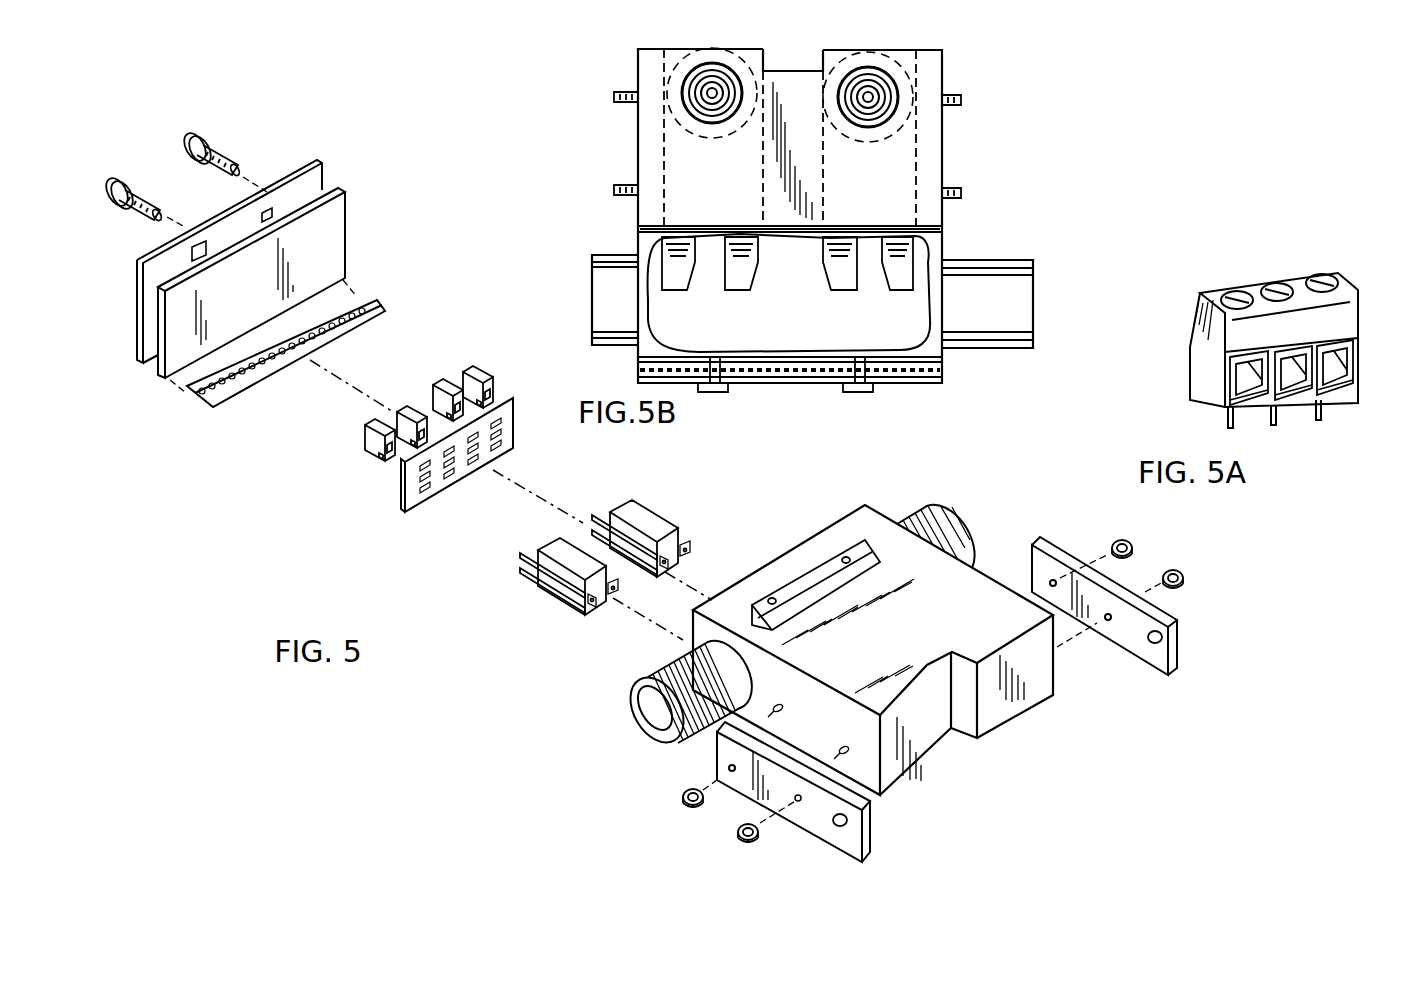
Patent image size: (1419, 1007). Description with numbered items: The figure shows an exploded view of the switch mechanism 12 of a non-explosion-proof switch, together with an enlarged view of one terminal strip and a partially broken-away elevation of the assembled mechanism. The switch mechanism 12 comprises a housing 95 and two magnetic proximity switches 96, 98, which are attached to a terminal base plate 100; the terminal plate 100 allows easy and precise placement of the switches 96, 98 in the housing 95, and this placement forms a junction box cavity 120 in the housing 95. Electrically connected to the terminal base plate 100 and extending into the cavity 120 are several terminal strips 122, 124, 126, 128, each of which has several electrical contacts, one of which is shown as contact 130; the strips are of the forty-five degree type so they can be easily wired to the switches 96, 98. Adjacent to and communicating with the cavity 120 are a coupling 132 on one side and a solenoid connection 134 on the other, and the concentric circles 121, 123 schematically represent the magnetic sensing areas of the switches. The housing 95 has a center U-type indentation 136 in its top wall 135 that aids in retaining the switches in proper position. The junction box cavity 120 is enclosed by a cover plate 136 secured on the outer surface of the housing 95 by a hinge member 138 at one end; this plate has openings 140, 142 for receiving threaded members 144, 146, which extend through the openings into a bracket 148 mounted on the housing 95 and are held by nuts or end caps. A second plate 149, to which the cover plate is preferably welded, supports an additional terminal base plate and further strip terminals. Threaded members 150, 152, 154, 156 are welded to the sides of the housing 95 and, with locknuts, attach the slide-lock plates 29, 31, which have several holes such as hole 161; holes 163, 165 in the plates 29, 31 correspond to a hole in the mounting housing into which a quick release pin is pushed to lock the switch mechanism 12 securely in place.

In FIG. 5, the switch mechanism 12 is at (910, 646).
In FIG. 5, the slide and lock plate 29 is at (717, 753).
In FIG. 5, the slide and lock plate 31 is at (1042, 565).
In FIG. 5, the housing 95 is at (960, 590).
In FIG. 5B, the housing 95 is at (960, 66).
In FIG. 5, the magnetic proximity switch 96 is at (648, 525).
In FIG. 5B, the magnetic proximity switch 96 is at (694, 186).
In FIG. 5, the magnetic proximity switch 98 is at (547, 597).
In FIG. 5B, the magnetic proximity switch 98 is at (859, 188).
In FIG. 5, the terminal base plate 100 is at (405, 505).
In FIG. 5B, the terminal base plate 100 is at (945, 230).
In FIG. 5B, the junction box cavity 120 is at (770, 293).
In FIG. 5B, the magnetic sensing area 121 is at (880, 55).
In FIG. 5, the terminal strip 122 is at (367, 455).
In FIG. 5A, the terminal strip 122 is at (1295, 420).
In FIG. 5B, the terminal strip 122 is at (900, 285).
In FIG. 5B, the magnetic sensing area 123 is at (703, 57).
In FIG. 5, the terminal strip 124 is at (403, 410).
In FIG. 5A, the terminal strip 124 is at (1293, 373).
In FIG. 5B, the terminal strip 124 is at (843, 285).
In FIG. 5, the terminal strip 126 is at (443, 385).
In FIG. 5A, the terminal strip 126 is at (1335, 367).
In FIG. 5B, the terminal strip 126 is at (745, 285).
In FIG. 5, the terminal strip 128 is at (483, 378).
In FIG. 5A, the terminal strip 128 is at (1291, 390).
In FIG. 5B, the terminal strip 128 is at (676, 282).
In FIG. 5A, the electrical contact 130 is at (1227, 427).
In FIG. 5, the coupling 132 is at (640, 730).
In FIG. 5B, the coupling 132 is at (1035, 290).
In FIG. 5, the solenoid connection 134 is at (968, 538).
In FIG. 5B, the solenoid connection 134 is at (592, 300).
In FIG. 5, the top wall 135 is at (1056, 690).
In FIG. 5, the indentation / cover plate 136 is at (322, 180).
In FIG. 5B, the indentation / cover plate 136 is at (770, 62).
In FIG. 5, the hinge member 138 is at (360, 298).
In FIG. 5, the opening 140 is at (272, 208).
In FIG. 5, the opening 142 is at (150, 283).
In FIG. 5, the threaded member 144 is at (215, 145).
In FIG. 5B, the threaded member 144 is at (718, 392).
In FIG. 5, the threaded member 146 is at (132, 212).
In FIG. 5B, the threaded member 146 is at (855, 392).
In FIG. 5, the bracket 148 is at (825, 558).
In FIG. 5B, the bracket 148 is at (910, 383).
In FIG. 5, the second plate 149 is at (320, 247).
In FIG. 5, the threaded member 150 is at (777, 706).
In FIG. 5B, the threaded member 150 is at (965, 100).
In FIG. 5, the threaded member 152 is at (843, 748).
In FIG. 5B, the threaded member 152 is at (962, 192).
In FIG. 5B, the threaded member 154 is at (614, 100).
In FIG. 5B, the threaded member 156 is at (614, 195).
In FIG. 5, the hole 161 is at (798, 802).
In FIG. 5, the hole 163 is at (850, 820).
In FIG. 5, the hole 165 is at (1167, 638).